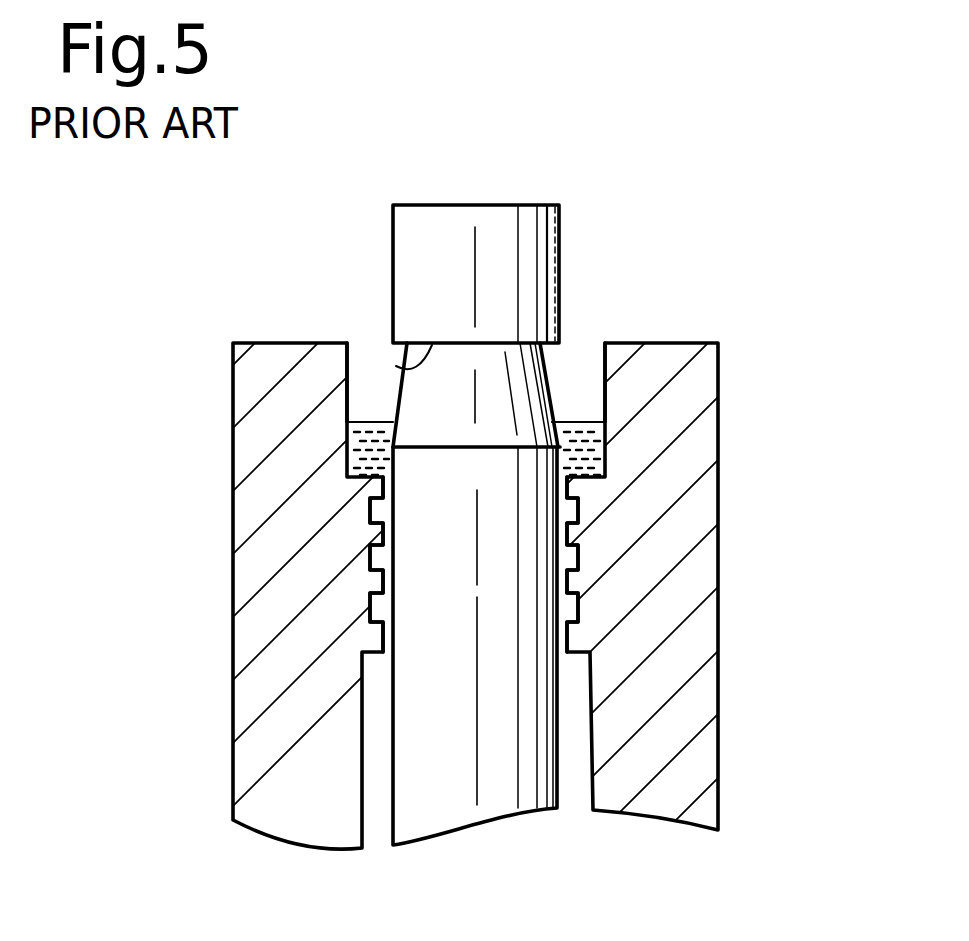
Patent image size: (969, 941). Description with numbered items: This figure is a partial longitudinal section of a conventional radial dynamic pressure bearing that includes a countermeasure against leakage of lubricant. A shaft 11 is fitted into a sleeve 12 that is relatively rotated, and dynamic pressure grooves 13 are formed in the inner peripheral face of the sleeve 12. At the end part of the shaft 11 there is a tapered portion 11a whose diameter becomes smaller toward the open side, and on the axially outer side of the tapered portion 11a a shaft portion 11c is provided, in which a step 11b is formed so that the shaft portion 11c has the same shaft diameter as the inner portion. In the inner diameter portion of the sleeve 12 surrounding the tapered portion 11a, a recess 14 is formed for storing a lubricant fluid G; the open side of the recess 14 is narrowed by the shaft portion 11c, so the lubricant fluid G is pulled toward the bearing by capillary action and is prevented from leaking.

The shaft 11 is at (423, 747).
The tapered portion 11a is at (425, 405).
The step 11b is at (396, 366).
The shaft portion 11c is at (512, 243).
The sleeve 12 is at (665, 583).
The dynamic pressure grooves 13 is at (385, 582).
The recess 14 is at (578, 395).
The lubricant fluid G is at (590, 453).